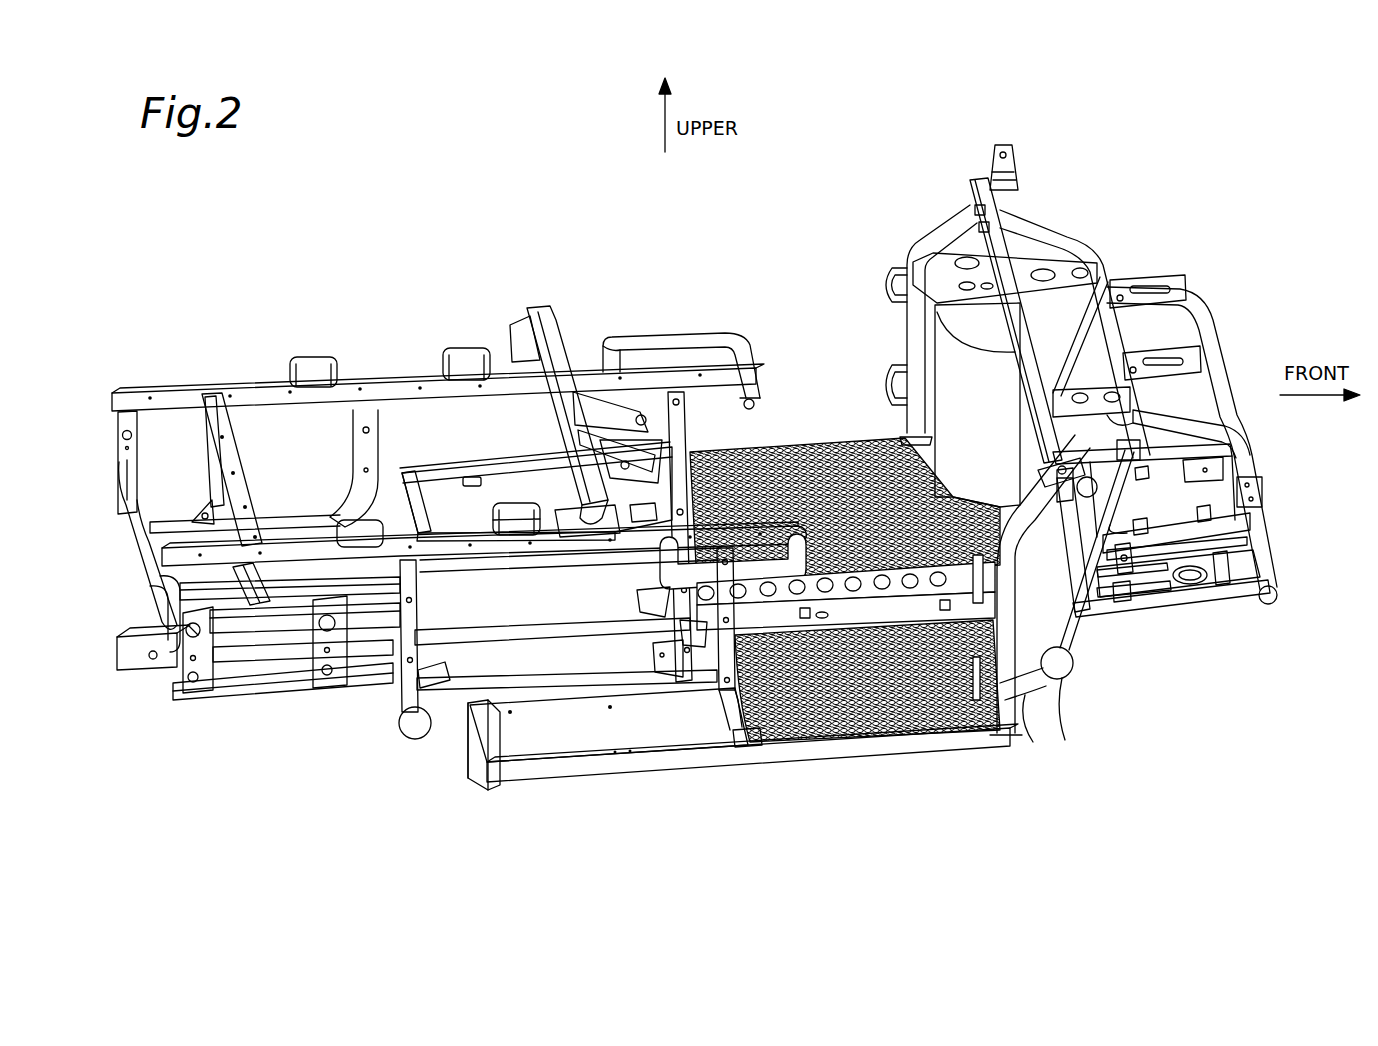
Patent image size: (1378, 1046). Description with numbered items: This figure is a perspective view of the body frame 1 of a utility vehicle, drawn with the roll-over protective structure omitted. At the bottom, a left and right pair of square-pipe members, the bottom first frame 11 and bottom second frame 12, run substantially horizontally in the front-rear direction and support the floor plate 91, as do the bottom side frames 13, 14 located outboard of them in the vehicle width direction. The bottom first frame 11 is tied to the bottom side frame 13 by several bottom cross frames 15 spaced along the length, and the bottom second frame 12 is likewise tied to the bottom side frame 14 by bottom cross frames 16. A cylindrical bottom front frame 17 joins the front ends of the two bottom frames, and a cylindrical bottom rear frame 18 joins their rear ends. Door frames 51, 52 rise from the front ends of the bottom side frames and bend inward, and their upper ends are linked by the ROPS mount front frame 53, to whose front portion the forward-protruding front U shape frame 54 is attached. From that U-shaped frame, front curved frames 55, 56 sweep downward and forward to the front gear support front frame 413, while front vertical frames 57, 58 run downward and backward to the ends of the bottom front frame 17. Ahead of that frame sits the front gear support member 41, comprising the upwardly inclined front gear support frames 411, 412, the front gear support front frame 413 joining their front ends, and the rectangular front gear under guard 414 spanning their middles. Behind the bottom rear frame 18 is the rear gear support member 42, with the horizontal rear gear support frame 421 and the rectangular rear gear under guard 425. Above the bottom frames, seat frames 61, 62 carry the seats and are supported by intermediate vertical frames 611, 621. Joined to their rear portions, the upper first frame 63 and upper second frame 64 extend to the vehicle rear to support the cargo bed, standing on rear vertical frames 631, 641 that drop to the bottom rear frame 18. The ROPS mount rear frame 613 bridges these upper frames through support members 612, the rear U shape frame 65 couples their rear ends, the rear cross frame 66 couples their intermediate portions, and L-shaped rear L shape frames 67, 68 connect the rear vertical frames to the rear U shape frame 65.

The body frame 1 is at (1154, 177).
The bottom first frame 11 is at (572, 710).
The bottom second frame 12 is at (643, 520).
The bottom side frame 13 is at (678, 765).
The bottom side frame 14 is at (448, 480).
The bottom cross frames 15 is at (500, 770).
The bottom cross frames 16 is at (413, 478).
The bottom front frame 17 is at (1055, 695).
The bottom rear frame 18 is at (420, 742).
The front gear support member 41 is at (1232, 625).
The front gear support frame 411 is at (1190, 600).
The front gear support frame 412 is at (1130, 575).
The front gear support front frame 413 is at (1270, 603).
The front gear under guard 414 is at (1158, 590).
The rear gear support member 42 is at (230, 711).
The rear gear support frame 421 is at (273, 672).
The rear gear under guard 425 is at (288, 642).
The door frame 51 is at (1005, 680).
The door frame 52 is at (912, 248).
The ROPS mount front frame 53 is at (995, 240).
The front U shape frame 54 is at (1085, 245).
The front curved frame 55 is at (1245, 440).
The front curved frame 56 is at (1200, 315).
The front vertical frame 57 is at (1100, 600).
The front vertical frame 58 is at (1100, 305).
The seat frame 61 is at (752, 530).
The intermediate vertical frame 611 is at (760, 635).
The support members 612 is at (523, 352).
The ROPS mount rear frame 613 is at (541, 330).
The seat frame 62 is at (676, 375).
The intermediate vertical frame 621 is at (682, 425).
The upper first frame 63 is at (470, 560).
The rear vertical frame 631 is at (400, 662).
The upper second frame 64 is at (377, 387).
The rear vertical frame 641 is at (348, 445).
The rear U shape frame 65 is at (122, 487).
The rear cross frame 66 is at (218, 413).
The rear L shape frame 67 is at (276, 592).
The rear L shape frame 68 is at (290, 492).
The floor plate 91 is at (835, 685).